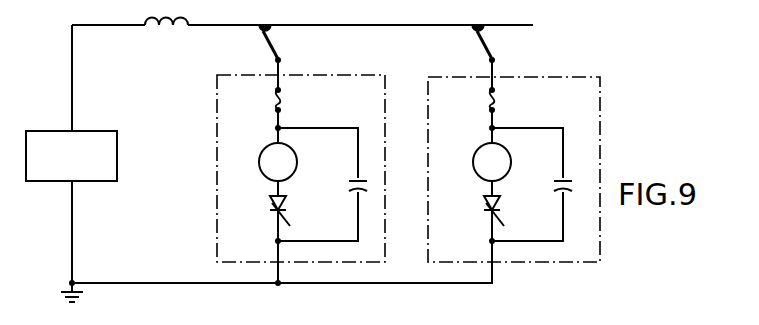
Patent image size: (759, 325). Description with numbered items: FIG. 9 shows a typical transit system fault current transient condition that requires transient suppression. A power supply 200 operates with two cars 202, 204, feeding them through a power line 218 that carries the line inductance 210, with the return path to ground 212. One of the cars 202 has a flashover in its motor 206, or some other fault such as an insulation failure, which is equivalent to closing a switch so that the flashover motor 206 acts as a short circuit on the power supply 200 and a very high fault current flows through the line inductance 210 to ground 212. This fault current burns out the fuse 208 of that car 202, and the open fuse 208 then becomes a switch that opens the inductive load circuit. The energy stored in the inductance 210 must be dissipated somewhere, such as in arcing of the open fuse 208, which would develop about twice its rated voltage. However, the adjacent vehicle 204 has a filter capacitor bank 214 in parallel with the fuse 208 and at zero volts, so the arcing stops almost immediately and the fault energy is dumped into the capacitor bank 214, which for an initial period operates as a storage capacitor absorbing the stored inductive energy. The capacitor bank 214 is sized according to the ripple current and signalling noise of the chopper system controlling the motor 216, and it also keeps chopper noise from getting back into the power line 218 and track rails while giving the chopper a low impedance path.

The power supply 200 is at (104, 131).
The car 202 is at (230, 74).
The car 204 is at (441, 75).
The motor 206 is at (298, 156).
The fuse 208 is at (272, 101).
The line inductance 210 is at (166, 29).
The ground 212 is at (398, 288).
The capacitor bank 214 is at (553, 190).
The motor 216 is at (506, 152).
The power line 218 is at (380, 26).